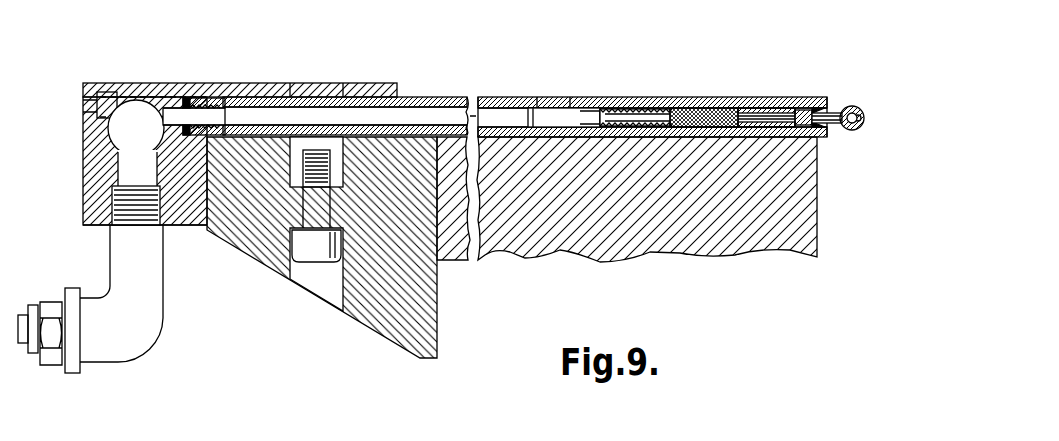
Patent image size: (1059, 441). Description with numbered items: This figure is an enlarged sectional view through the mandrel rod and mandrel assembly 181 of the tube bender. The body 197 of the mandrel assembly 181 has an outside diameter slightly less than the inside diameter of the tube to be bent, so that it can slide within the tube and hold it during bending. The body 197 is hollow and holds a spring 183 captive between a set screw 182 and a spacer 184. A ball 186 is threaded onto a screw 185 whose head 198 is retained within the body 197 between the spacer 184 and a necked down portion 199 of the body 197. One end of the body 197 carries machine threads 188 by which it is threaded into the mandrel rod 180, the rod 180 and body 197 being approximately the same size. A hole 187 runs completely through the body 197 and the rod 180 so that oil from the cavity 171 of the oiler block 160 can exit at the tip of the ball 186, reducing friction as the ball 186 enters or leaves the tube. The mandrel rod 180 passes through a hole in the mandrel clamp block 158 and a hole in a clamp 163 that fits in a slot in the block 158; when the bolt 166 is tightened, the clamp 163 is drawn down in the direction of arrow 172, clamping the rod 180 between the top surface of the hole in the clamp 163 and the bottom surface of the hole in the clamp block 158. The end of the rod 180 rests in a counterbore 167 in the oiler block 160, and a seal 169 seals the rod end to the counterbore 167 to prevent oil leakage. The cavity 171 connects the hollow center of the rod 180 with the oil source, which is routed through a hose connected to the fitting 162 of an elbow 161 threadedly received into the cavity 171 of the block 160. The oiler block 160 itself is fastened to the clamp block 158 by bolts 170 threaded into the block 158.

The mandrel clamp block 158 is at (278, 83).
The oiler block 160 is at (88, 180).
The elbow 161 is at (157, 333).
The fitting 162 is at (30, 353).
The clamp 163 is at (320, 83).
The bolt 166 is at (328, 258).
The counterbore 167 is at (212, 102).
The seal 169 is at (200, 106).
The bolt 170 is at (88, 105).
The cavity 171 is at (140, 108).
The arrow 172 is at (265, 311).
The mandrel rod 180 is at (493, 97).
The mandrel assembly 181 is at (670, 170).
The set screw 182 is at (640, 105).
The spring 183 is at (720, 105).
The spacer 184 is at (753, 105).
The screw 185 is at (835, 133).
The ball 186 is at (850, 138).
The hole 187 is at (550, 120).
The machine threads 188 is at (555, 98).
The body 197 is at (578, 117).
The head 198 is at (800, 107).
The necked down portion 199 is at (813, 105).